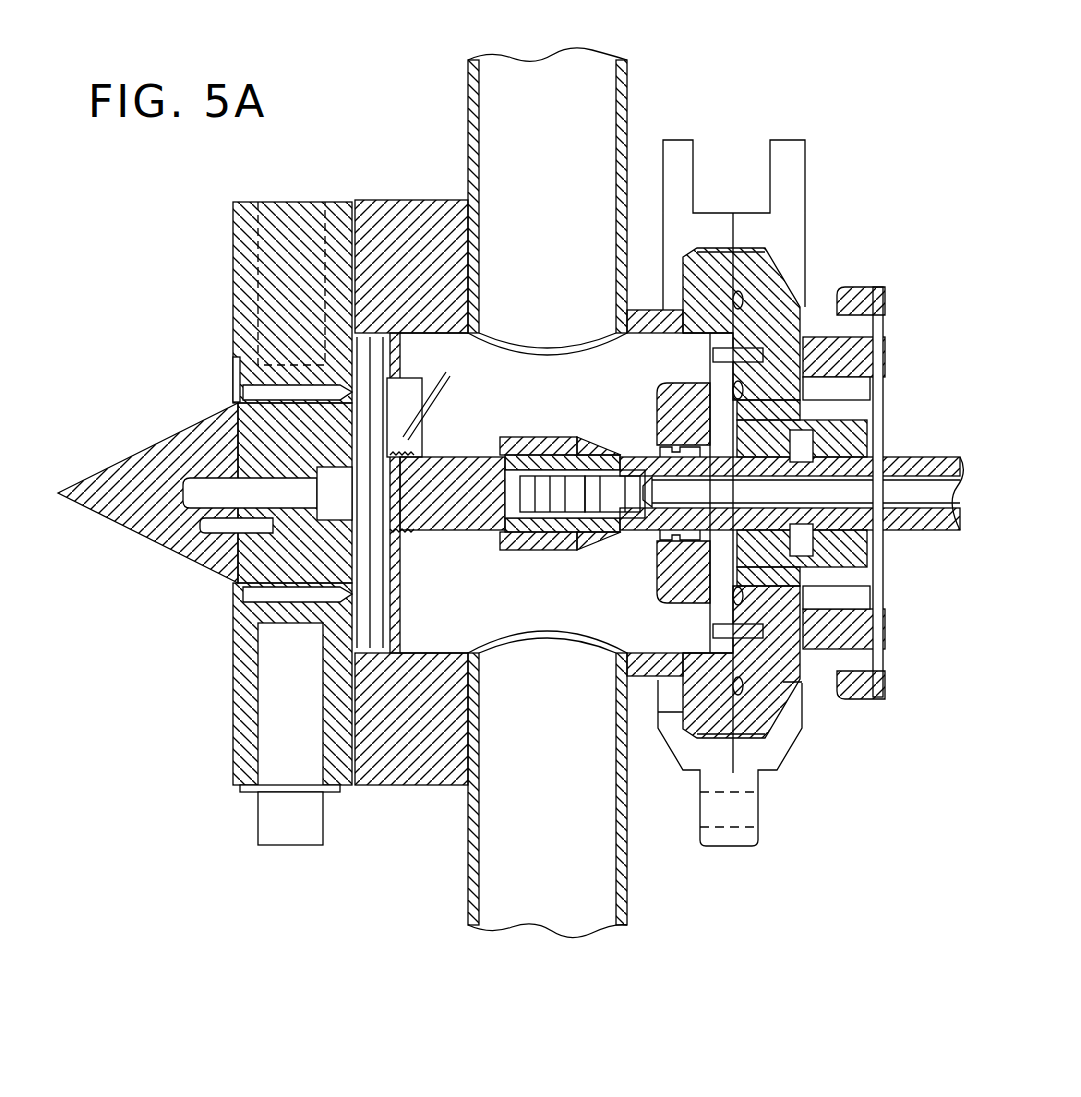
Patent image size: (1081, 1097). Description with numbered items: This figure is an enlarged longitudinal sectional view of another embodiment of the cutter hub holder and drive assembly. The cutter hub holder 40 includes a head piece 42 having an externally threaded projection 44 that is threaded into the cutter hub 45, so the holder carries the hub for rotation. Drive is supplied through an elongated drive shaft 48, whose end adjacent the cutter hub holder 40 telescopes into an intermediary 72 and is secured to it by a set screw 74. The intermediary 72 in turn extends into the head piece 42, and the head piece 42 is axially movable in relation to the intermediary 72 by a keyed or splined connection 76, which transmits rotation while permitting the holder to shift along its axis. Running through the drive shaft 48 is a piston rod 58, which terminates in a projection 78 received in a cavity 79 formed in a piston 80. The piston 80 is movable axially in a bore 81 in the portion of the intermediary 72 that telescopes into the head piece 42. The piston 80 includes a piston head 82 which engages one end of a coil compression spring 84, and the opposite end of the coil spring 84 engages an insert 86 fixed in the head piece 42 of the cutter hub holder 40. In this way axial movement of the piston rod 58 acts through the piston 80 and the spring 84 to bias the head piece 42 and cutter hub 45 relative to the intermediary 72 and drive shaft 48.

The cutter hub holder 40 is at (424, 799).
The head piece 42 is at (450, 537).
The externally threaded projection 44 is at (400, 537).
The cutter hub 45 is at (420, 428).
The drive shaft 48 is at (937, 462).
The piston rod 58 is at (940, 497).
The intermediary 72 is at (840, 434).
The set screw 74 is at (805, 430).
The keyed or splined connection 76 is at (535, 452).
The projection 78 is at (660, 525).
The cavity 79 is at (622, 512).
The piston 80 is at (547, 499).
The bore 81 is at (632, 462).
The piston head 82 is at (735, 527).
The coil compression spring 84 is at (510, 545).
The insert 86 is at (472, 442).